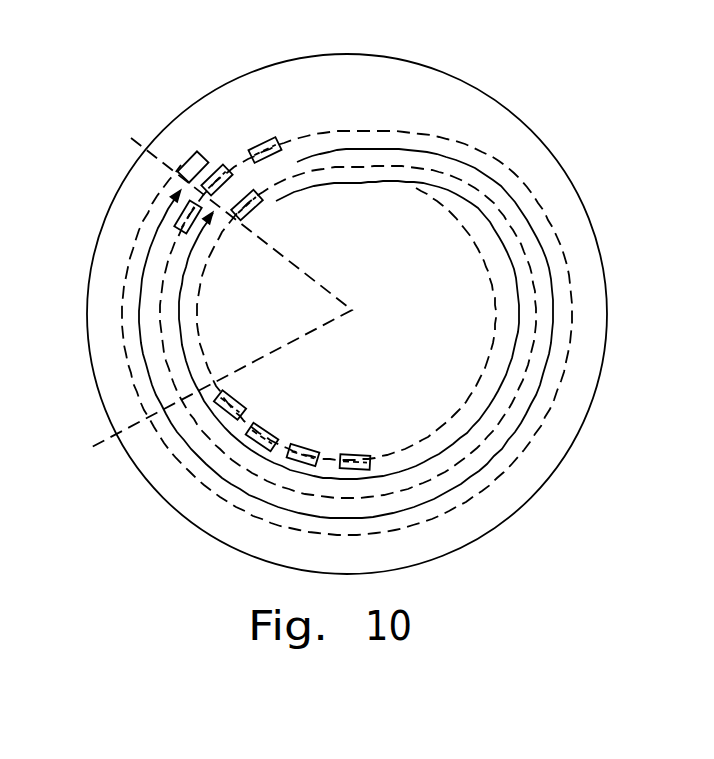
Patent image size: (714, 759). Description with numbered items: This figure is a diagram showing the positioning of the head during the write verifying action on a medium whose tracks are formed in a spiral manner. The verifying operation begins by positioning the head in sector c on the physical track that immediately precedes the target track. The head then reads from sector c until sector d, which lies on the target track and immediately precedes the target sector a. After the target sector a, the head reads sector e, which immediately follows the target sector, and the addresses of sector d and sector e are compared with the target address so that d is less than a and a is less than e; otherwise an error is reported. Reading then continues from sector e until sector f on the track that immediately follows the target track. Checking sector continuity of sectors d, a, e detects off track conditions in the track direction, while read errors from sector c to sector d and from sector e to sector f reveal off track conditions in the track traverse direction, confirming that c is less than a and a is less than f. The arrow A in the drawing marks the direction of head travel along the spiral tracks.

The target sector a is at (205, 182).
The sector c is at (236, 213).
The sector d is at (178, 218).
The sector e is at (263, 140).
The sector f is at (193, 153).
The rotation direction A is at (268, 392).